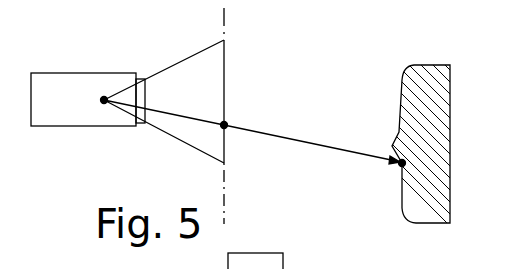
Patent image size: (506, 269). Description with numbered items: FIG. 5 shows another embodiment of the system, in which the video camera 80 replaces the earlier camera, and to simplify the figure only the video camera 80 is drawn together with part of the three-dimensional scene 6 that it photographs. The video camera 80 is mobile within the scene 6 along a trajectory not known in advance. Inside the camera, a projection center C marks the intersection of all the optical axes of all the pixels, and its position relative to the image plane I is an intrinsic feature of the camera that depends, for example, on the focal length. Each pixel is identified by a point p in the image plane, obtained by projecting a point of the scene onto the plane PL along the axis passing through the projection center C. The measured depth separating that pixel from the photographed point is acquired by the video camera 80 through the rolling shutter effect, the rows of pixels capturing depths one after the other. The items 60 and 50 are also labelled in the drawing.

The video camera 80 is at (45, 72).
The projection center C is at (105, 96).
The image plane I is at (226, 58).
The point in the image plane p is at (226, 124).
The plane PL is at (399, 166).
The three-dimensional scene 6 is at (447, 223).
The reference 60 is at (0, 237).
The block 50 is at (255, 261).